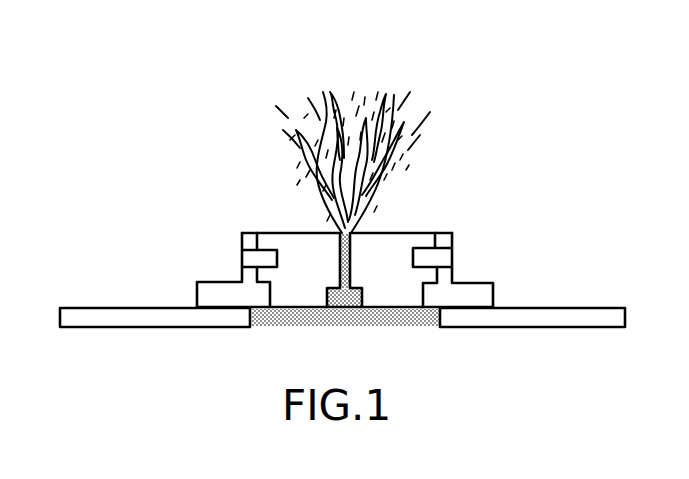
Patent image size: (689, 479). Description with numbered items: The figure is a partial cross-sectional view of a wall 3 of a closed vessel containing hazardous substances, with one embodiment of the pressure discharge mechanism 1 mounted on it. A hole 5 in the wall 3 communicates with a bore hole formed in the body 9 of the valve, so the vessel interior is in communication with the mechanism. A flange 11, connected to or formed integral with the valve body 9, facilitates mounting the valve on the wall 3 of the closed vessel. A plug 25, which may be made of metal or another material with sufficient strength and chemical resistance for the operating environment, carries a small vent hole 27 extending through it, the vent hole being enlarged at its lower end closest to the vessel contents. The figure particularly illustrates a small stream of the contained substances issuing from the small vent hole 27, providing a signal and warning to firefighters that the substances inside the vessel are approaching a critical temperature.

The pressure discharge mechanism 1 is at (438, 100).
The wall of closed vessel 3 is at (133, 307).
The hole 5 is at (435, 315).
The body 9 is at (250, 240).
The flange 11 is at (476, 290).
The plug 25 is at (403, 233).
The small vent hole 27 is at (340, 272).